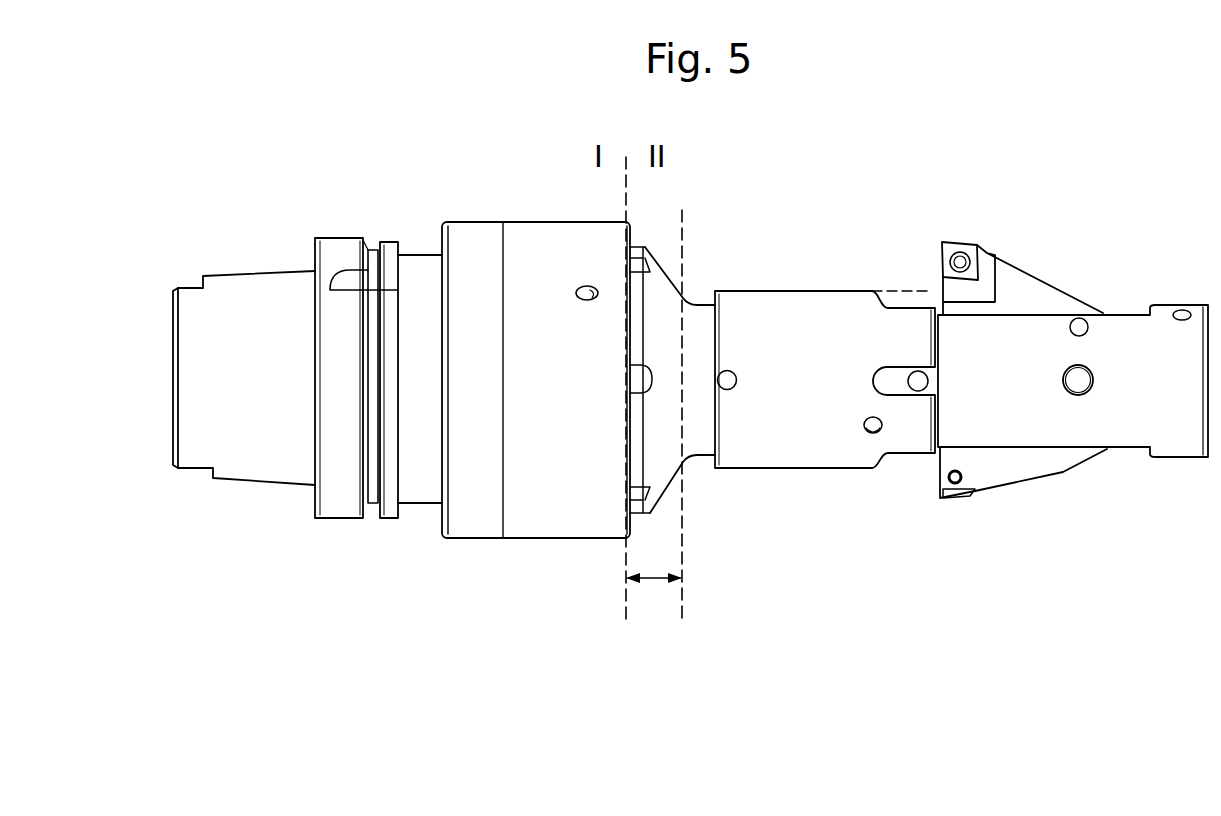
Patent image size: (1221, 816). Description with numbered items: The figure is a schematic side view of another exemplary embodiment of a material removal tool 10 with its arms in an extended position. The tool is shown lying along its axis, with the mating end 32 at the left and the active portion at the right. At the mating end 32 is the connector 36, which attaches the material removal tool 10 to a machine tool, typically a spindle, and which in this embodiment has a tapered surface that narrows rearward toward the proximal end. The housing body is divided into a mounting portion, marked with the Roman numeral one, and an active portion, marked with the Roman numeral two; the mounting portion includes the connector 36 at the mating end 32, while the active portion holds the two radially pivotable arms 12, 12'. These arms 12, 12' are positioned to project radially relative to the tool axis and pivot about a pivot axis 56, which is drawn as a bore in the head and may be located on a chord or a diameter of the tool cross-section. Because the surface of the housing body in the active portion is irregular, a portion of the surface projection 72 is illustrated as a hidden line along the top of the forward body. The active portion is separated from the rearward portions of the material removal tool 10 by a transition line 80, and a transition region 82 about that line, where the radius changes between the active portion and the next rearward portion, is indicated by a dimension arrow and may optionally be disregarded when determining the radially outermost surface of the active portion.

The material removal tool 10 is at (885, 165).
The radially pivotable arm 12 is at (1073, 341).
The radially pivotable arm 12' is at (1023, 492).
The mating end 32 is at (150, 407).
The connector 36 is at (255, 288).
The pivot axis 56 is at (1088, 380).
The surface projection 72 is at (907, 290).
The transition line 80 is at (626, 608).
The transition region 82 is at (651, 583).